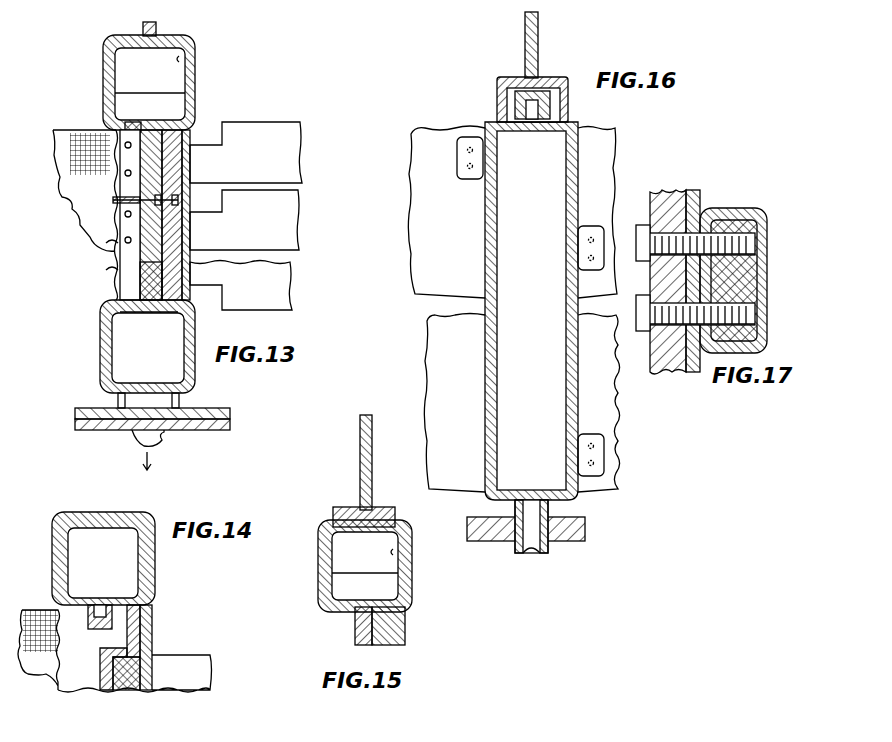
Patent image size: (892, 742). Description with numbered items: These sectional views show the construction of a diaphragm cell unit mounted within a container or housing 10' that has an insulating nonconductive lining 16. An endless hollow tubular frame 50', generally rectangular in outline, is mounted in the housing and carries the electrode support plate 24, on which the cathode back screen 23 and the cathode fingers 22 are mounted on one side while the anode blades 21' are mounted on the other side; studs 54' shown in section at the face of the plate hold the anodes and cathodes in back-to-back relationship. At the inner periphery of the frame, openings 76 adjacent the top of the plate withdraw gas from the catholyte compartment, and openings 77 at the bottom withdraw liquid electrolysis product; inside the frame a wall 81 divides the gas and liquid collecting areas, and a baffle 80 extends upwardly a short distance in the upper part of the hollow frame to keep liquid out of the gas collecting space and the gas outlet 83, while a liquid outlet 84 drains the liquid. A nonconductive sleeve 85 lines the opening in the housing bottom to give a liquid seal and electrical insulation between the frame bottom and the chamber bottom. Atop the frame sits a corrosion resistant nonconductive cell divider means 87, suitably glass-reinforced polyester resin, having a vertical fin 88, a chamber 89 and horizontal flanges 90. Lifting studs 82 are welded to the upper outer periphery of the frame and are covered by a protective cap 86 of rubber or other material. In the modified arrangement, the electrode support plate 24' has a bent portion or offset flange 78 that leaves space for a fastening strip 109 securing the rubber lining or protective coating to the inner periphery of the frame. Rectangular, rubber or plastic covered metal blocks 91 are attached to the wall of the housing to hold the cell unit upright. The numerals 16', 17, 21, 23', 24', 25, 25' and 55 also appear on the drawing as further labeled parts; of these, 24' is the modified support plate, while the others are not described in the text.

In FIG. 16, the container or housing 10' is at (499, 309).
In FIG. 17, the container or housing 10' is at (675, 265).
In FIG. 13, the insulating nonconductive lining 16 is at (127, 82).
In FIG. 14, the tubular member 16' is at (121, 601).
In FIG. 15, the tubular member 16' is at (351, 566).
In FIG. 16, the section line 17 is at (480, 98).
In FIG. 14, the panel 21 is at (154, 673).
In FIG. 13, the anode blades 21' is at (258, 216).
In FIG. 13, the cathode fingers 22 is at (72, 195).
In FIG. 13, the cathode back screen 23 is at (102, 204).
In FIG. 14, the strip 23' is at (39, 637).
In FIG. 13, the electrode support plate 24 is at (111, 281).
In FIG. 15, the electrode support plate 24 is at (345, 626).
In FIG. 14, the electrode support plate 24' is at (97, 672).
In FIG. 13, the block 25 is at (177, 215).
In FIG. 15, the block 25 is at (402, 626).
In FIG. 14, the block 25' is at (152, 673).
In FIG. 13, the endless tubular frame 50' is at (204, 58).
In FIG. 14, the endless tubular frame 50' is at (110, 557).
In FIG. 15, the endless tubular frame 50' is at (419, 555).
In FIG. 16, the endless tubular frame 50' is at (544, 275).
In FIG. 13, the studs 54' is at (114, 212).
In FIG. 13, the fastener 55 is at (112, 243).
In FIG. 13, the openings 76 is at (136, 124).
In FIG. 13, the openings 77 is at (128, 312).
In FIG. 14, the bent portion or offset flange 78 is at (140, 622).
In FIG. 13, the baffle 80 is at (162, 104).
In FIG. 15, the baffle 80 is at (370, 584).
In FIG. 13, the wall 81 is at (146, 361).
In FIG. 13, the lifting studs 82 is at (143, 24).
In FIG. 16, the lifting studs 82 is at (532, 124).
In FIG. 13, the gas outlet 83 is at (134, 441).
In FIG. 16, the liquid outlet 84 is at (530, 556).
In FIG. 16, the nonconductive sleeve 85 is at (548, 552).
In FIG. 16, the protective cap 86 is at (550, 103).
In FIG. 15, the cell divider means 87 is at (358, 440).
In FIG. 16, the cell divider means 87 is at (522, 51).
In FIG. 15, the vertical fin 88 is at (372, 472).
In FIG. 16, the vertical fin 88 is at (538, 28).
In FIG. 16, the chamber 89 is at (552, 80).
In FIG. 15, the horizontal flanges 90 is at (350, 510).
In FIG. 16, the metal blocks 91 is at (456, 156).
In FIG. 17, the metal blocks 91 is at (728, 212).
In FIG. 14, the fastening strip 109 is at (90, 628).